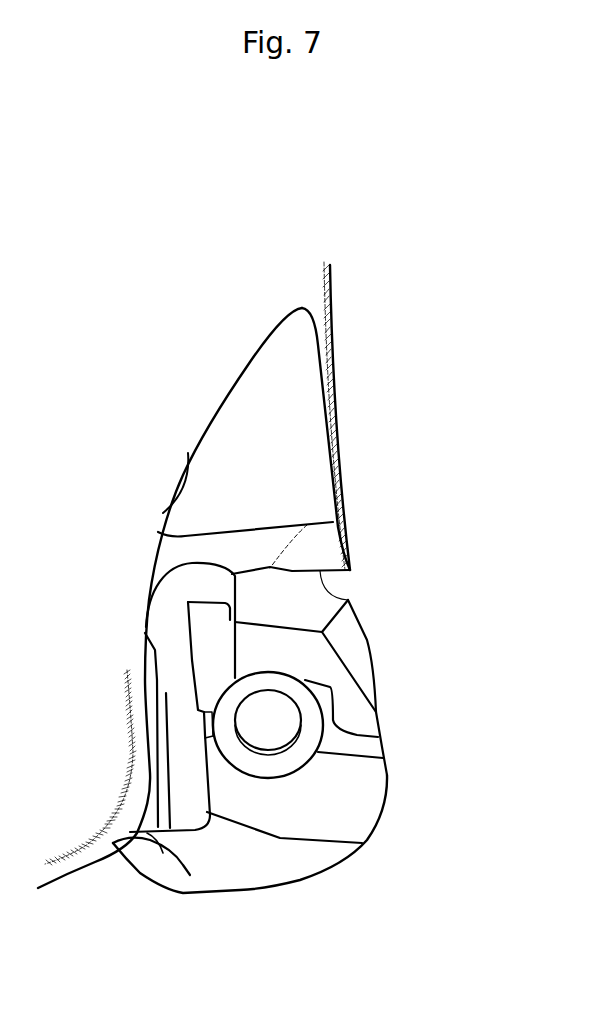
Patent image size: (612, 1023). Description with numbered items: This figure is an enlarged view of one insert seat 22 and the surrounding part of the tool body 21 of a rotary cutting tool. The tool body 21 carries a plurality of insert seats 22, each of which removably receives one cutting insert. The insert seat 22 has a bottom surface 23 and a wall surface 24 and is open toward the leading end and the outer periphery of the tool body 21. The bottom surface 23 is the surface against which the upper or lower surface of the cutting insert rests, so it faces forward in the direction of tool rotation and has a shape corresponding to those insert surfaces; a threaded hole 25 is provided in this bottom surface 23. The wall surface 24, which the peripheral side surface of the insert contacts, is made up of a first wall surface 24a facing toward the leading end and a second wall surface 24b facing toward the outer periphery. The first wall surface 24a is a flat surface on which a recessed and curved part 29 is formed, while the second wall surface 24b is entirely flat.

The tool body 21 is at (182, 388).
The insert seat 22 is at (285, 805).
The bottom surface 23 is at (325, 772).
The wall surface 24 is at (344, 777).
The first wall surface 24a is at (348, 600).
The second wall surface 24b is at (153, 787).
The threaded hole 25 is at (298, 711).
The recessed and curved part 29 is at (307, 525).